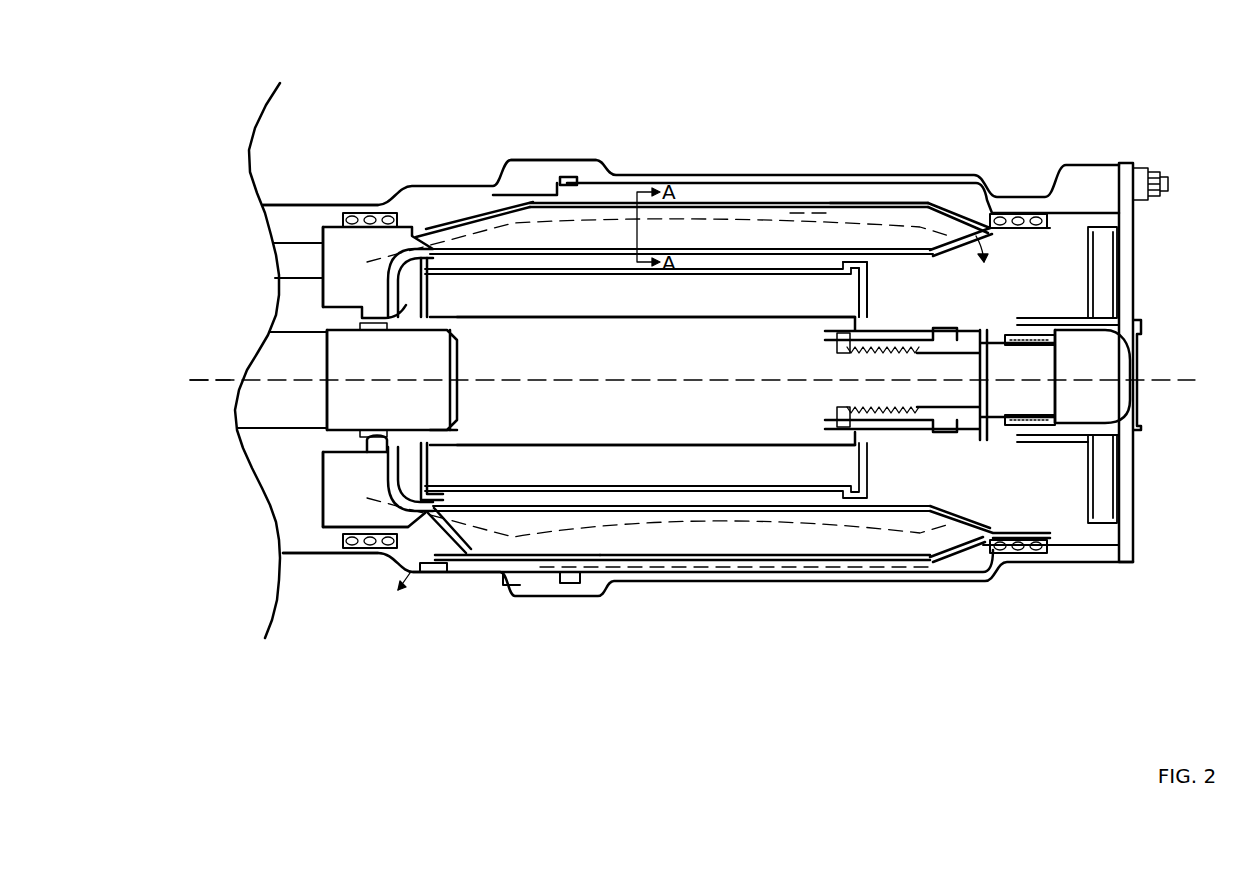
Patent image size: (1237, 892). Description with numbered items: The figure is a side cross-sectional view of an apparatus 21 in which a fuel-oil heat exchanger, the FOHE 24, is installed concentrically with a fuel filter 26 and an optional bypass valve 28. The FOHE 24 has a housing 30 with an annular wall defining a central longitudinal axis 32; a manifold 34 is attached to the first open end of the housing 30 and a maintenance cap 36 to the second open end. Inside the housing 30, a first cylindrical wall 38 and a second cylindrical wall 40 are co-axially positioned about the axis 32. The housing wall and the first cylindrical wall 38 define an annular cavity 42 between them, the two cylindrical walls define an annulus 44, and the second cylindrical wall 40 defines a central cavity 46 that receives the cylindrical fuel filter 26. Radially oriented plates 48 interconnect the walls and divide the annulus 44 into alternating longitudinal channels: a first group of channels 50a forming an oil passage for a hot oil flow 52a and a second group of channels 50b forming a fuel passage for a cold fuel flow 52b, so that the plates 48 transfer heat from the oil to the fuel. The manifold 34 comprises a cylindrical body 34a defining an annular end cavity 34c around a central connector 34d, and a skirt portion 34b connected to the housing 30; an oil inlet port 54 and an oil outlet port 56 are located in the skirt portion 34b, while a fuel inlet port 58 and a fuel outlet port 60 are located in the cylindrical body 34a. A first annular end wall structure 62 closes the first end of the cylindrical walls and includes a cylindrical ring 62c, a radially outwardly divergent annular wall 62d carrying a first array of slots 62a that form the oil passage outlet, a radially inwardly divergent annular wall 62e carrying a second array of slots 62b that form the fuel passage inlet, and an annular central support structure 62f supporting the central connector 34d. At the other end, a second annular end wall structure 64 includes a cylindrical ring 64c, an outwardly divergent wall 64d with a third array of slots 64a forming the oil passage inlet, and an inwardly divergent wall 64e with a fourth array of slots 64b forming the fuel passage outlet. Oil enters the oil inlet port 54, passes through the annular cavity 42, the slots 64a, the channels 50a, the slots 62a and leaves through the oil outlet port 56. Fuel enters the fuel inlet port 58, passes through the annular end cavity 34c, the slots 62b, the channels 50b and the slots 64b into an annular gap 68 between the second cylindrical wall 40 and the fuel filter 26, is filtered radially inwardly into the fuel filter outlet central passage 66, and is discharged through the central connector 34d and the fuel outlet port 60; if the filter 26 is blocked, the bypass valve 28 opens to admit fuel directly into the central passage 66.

The apparatus 21 is at (915, 124).
The FOHE 24 is at (763, 200).
The fuel filter 26 is at (757, 475).
The bypass valve 28 is at (983, 432).
The housing 30 is at (667, 177).
The central longitudinal axis 32 is at (196, 378).
The manifold 34 is at (305, 220).
The cylindrical body 34a is at (300, 542).
The skirt portion 34b is at (507, 160).
The annular end cavity 34c is at (377, 505).
The central connector 34d is at (445, 428).
The maintenance cap 36 is at (1118, 317).
The first cylindrical wall 38 is at (837, 200).
The second cylindrical wall 40 is at (917, 255).
The annular cavity 42 is at (722, 192).
The annulus 44 is at (608, 213).
The central cavity 46 is at (705, 498).
The plates 48 is at (738, 538).
The first group of channels 50a is at (557, 554).
The second group of channels 50b is at (562, 244).
The hot oil flow 52a is at (683, 522).
The cold fuel flow 52b is at (793, 220).
The oil inlet port 54 is at (533, 597).
The oil outlet port 56 is at (430, 570).
The fuel inlet port 58 is at (295, 262).
The fuel outlet port 60 is at (258, 407).
The first annular end wall structure 62 is at (400, 223).
The first array of slots 62a is at (430, 553).
The second array of slots 62b is at (418, 233).
The cylindrical ring 62c is at (365, 543).
The radially outwardly divergent annular wall 62d is at (435, 227).
The radially inwardly divergent annular wall 62e is at (410, 527).
The annular central support structure 62f is at (392, 460).
The second annular end wall structure 64 is at (988, 225).
The third array of slots 64a is at (953, 550).
The fourth array of slots 64b is at (953, 246).
The cylindrical ring 64c is at (1047, 547).
The radially outwardly divergent annular wall 64d is at (935, 203).
The radially inwardly divergent annular wall 64e is at (962, 518).
The fuel filter outlet central passage 66 is at (646, 363).
The annular gap 68 is at (873, 260).